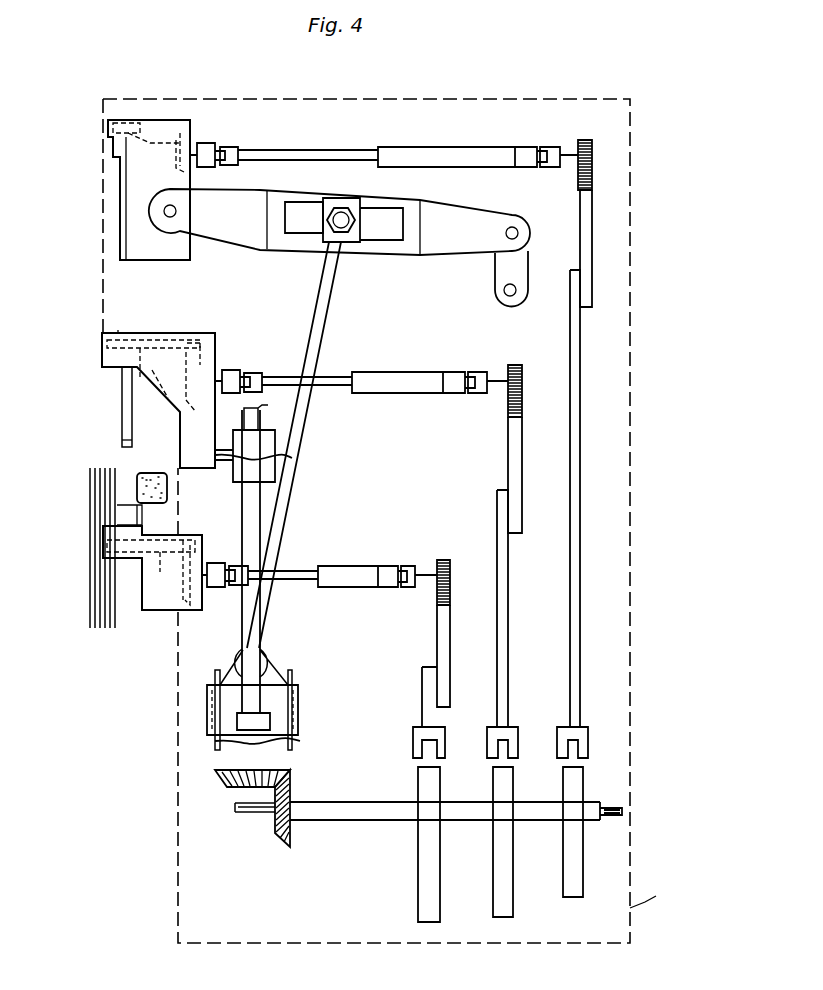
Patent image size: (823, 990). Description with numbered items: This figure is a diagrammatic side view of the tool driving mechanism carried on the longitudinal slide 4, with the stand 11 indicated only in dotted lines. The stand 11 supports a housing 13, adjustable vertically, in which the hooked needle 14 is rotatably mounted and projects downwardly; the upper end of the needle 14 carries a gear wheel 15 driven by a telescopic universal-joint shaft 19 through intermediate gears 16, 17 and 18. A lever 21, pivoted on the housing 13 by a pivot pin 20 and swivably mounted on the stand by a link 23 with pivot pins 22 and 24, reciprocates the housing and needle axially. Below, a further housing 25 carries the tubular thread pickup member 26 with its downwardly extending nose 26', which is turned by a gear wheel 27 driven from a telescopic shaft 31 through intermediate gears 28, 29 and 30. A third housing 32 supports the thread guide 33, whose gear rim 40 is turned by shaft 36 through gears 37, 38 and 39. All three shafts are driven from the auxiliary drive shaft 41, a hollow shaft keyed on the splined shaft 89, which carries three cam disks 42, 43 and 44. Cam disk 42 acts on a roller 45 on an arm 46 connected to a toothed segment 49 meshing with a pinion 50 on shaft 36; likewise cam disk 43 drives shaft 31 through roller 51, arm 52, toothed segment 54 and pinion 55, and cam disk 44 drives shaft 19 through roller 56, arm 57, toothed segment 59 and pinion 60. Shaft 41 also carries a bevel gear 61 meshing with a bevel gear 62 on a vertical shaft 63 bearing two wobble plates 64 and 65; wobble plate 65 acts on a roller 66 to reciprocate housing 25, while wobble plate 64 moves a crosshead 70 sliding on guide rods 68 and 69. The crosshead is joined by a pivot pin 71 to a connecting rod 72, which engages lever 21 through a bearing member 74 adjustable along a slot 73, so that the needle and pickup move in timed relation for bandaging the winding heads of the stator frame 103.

The longitudinal slide 4 is at (650, 895).
The stand 11 is at (402, 99).
The housing 13 is at (185, 258).
The hooked needle 14 is at (120, 330).
The gear wheel 15 is at (140, 120).
The intermediate gear 16 is at (182, 112).
The intermediate gear 17 is at (190, 133).
The intermediate gear 18 is at (215, 145).
The universal-joint shaft 19 is at (325, 150).
The pivot pin 20 is at (178, 205).
The lever 21 is at (250, 240).
The pivot pin 22 is at (510, 300).
The link 23 is at (495, 266).
The pivot pin 24 is at (520, 228).
The housing 25 is at (185, 425).
The tubular thread pickup member 26 is at (103, 407).
The nose 26' is at (107, 445).
The gear wheel 27 is at (110, 348).
The intermediate gear 28 is at (195, 333).
The intermediate gear 29 is at (166, 386).
The intermediate gear 30 is at (222, 368).
The universal-joint shaft 31 is at (397, 375).
The third housing 32 is at (202, 598).
The thread guide 33 is at (140, 518).
The universal-joint shaft 36 is at (365, 570).
The intermediate gear 37 is at (185, 603).
The intermediate gear 38 is at (166, 570).
The intermediate gear 39 is at (200, 538).
The gear rim 40 is at (103, 540).
The auxiliary drive shaft 41 is at (355, 803).
The cam disk 42 is at (418, 895).
The cam disk 43 is at (493, 876).
The cam disk 44 is at (563, 860).
The roller 45 is at (413, 758).
The arm 46 is at (427, 700).
The toothed segment 49 is at (460, 630).
The pinion 50 is at (462, 568).
The roller 51 is at (493, 760).
The arm 52 is at (508, 598).
The toothed segment 54 is at (522, 466).
The pinion 55 is at (524, 381).
The roller 56 is at (565, 760).
The arm 57 is at (582, 495).
The toothed segment 59 is at (592, 242).
The pinion 60 is at (594, 153).
The bevel gear 61 is at (290, 840).
The bevel gear 62 is at (214, 776).
The vertical shaft 63 is at (243, 636).
The wobble plate 64 is at (302, 741).
The wobble plate 65 is at (293, 458).
The roller 66 is at (236, 432).
The guide rod 68 is at (213, 678).
The guide rod 69 is at (294, 676).
The crosshead 70 is at (300, 716).
The pivot pin 71 is at (272, 662).
The connecting rod 72 is at (283, 522).
The slot 73 is at (303, 205).
The bearing member 74 is at (355, 208).
The splined shaft 89 is at (252, 815).
The stator frame 103 is at (92, 470).